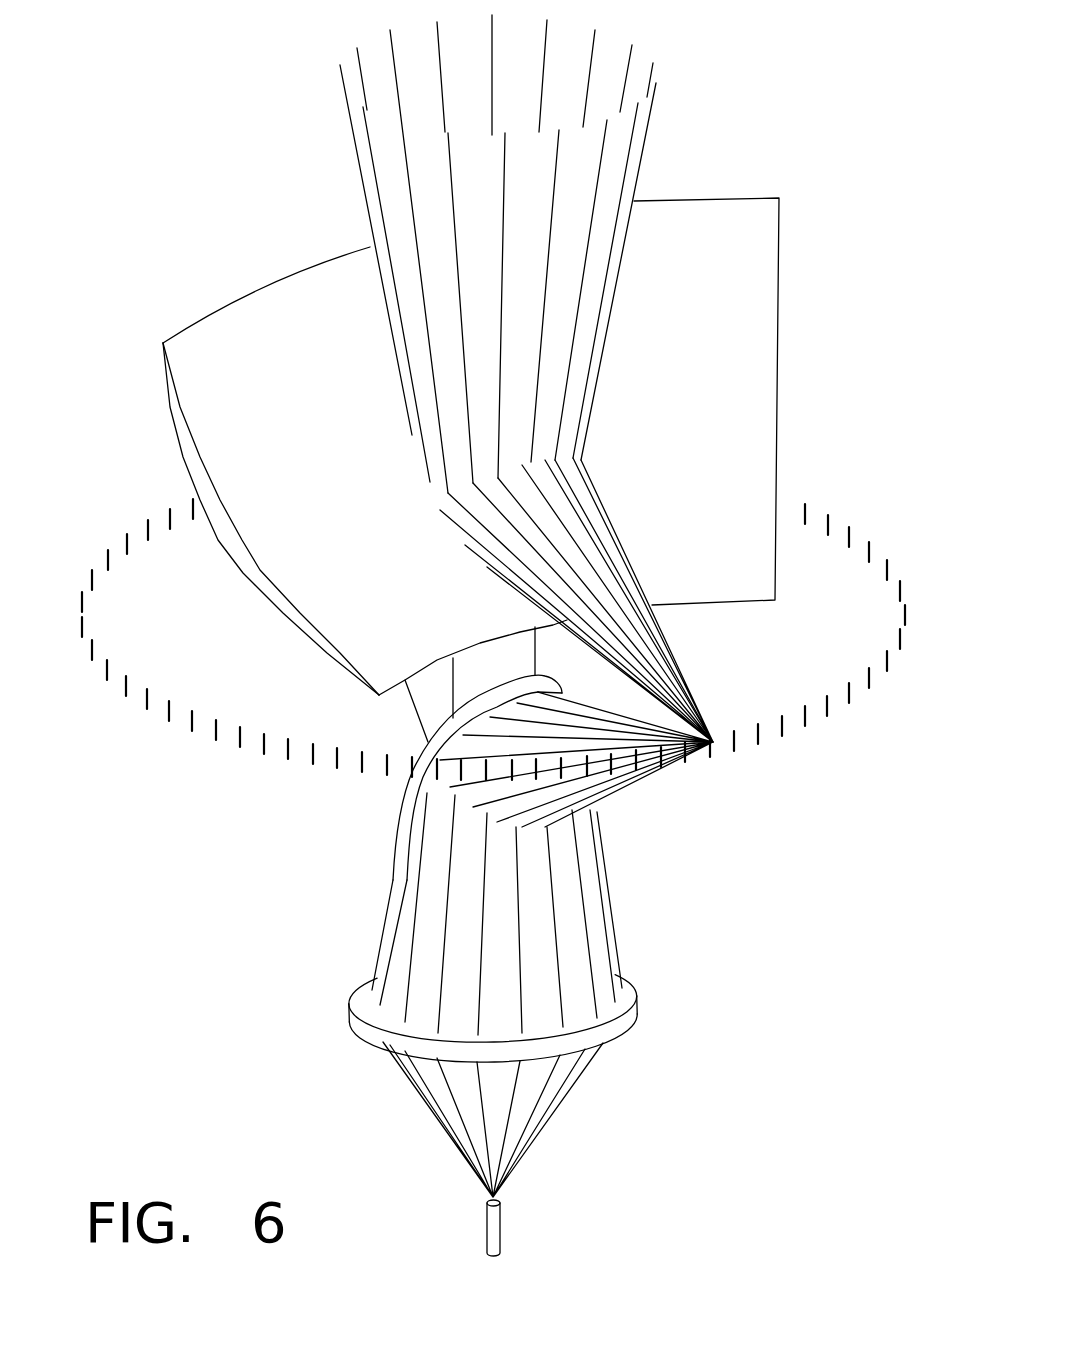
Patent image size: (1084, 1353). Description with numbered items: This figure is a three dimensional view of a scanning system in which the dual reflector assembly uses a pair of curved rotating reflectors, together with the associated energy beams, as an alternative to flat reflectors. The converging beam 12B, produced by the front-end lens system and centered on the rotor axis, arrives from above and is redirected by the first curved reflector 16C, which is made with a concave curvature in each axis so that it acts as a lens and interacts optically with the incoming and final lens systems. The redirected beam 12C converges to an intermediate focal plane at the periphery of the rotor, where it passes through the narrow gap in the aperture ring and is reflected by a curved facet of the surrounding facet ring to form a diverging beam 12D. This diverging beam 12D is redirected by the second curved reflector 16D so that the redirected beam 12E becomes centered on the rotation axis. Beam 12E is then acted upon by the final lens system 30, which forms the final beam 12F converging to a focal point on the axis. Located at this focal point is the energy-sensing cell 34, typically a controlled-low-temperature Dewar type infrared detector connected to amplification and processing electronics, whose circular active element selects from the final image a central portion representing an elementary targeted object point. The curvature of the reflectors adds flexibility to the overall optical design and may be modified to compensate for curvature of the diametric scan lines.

The converging beam 12B is at (647, 117).
The curved reflector 16C is at (777, 343).
The redirected beam 12C is at (667, 640).
The diverging beam 12D is at (622, 793).
The curved reflector 16D is at (397, 827).
The redirected beam 12E is at (603, 878).
The final lens system 30 is at (640, 1002).
The final beam 12F is at (537, 1148).
The energy-sensing cell 34 is at (502, 1227).